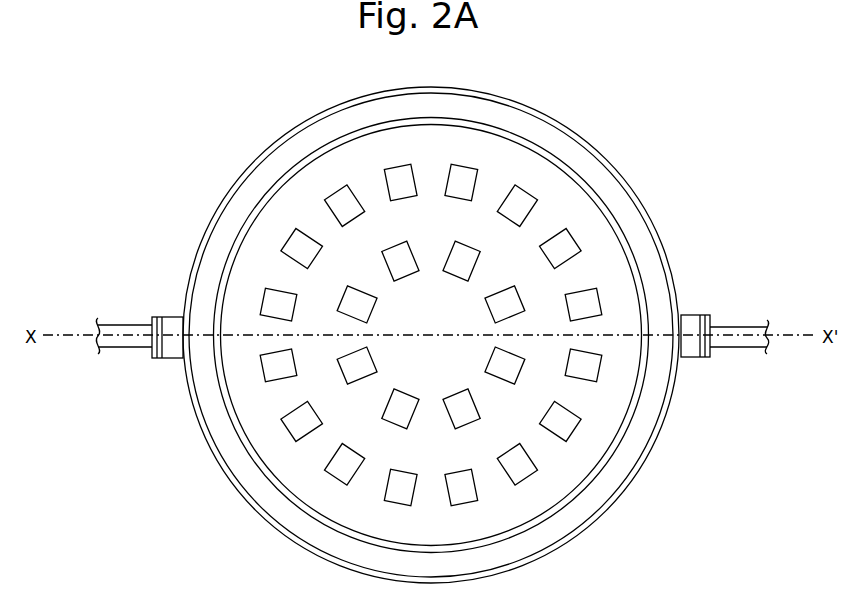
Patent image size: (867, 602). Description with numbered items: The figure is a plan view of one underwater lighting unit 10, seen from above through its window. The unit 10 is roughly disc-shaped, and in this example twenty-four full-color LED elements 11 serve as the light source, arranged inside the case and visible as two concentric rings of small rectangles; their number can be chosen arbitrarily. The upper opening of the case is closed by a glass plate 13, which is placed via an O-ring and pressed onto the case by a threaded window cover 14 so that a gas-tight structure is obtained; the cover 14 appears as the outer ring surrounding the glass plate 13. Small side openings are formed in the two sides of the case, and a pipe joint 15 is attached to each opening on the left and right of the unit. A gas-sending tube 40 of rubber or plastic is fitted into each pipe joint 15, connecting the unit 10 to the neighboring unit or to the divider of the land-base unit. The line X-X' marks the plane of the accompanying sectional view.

The underwater lighting unit 10 is at (272, 127).
The LED element 11 is at (528, 190).
The glass plate 13 is at (608, 263).
The threaded window cover 14 is at (607, 187).
The pipe joint 15 is at (173, 343).
The gas-sending tube 40 is at (730, 325).